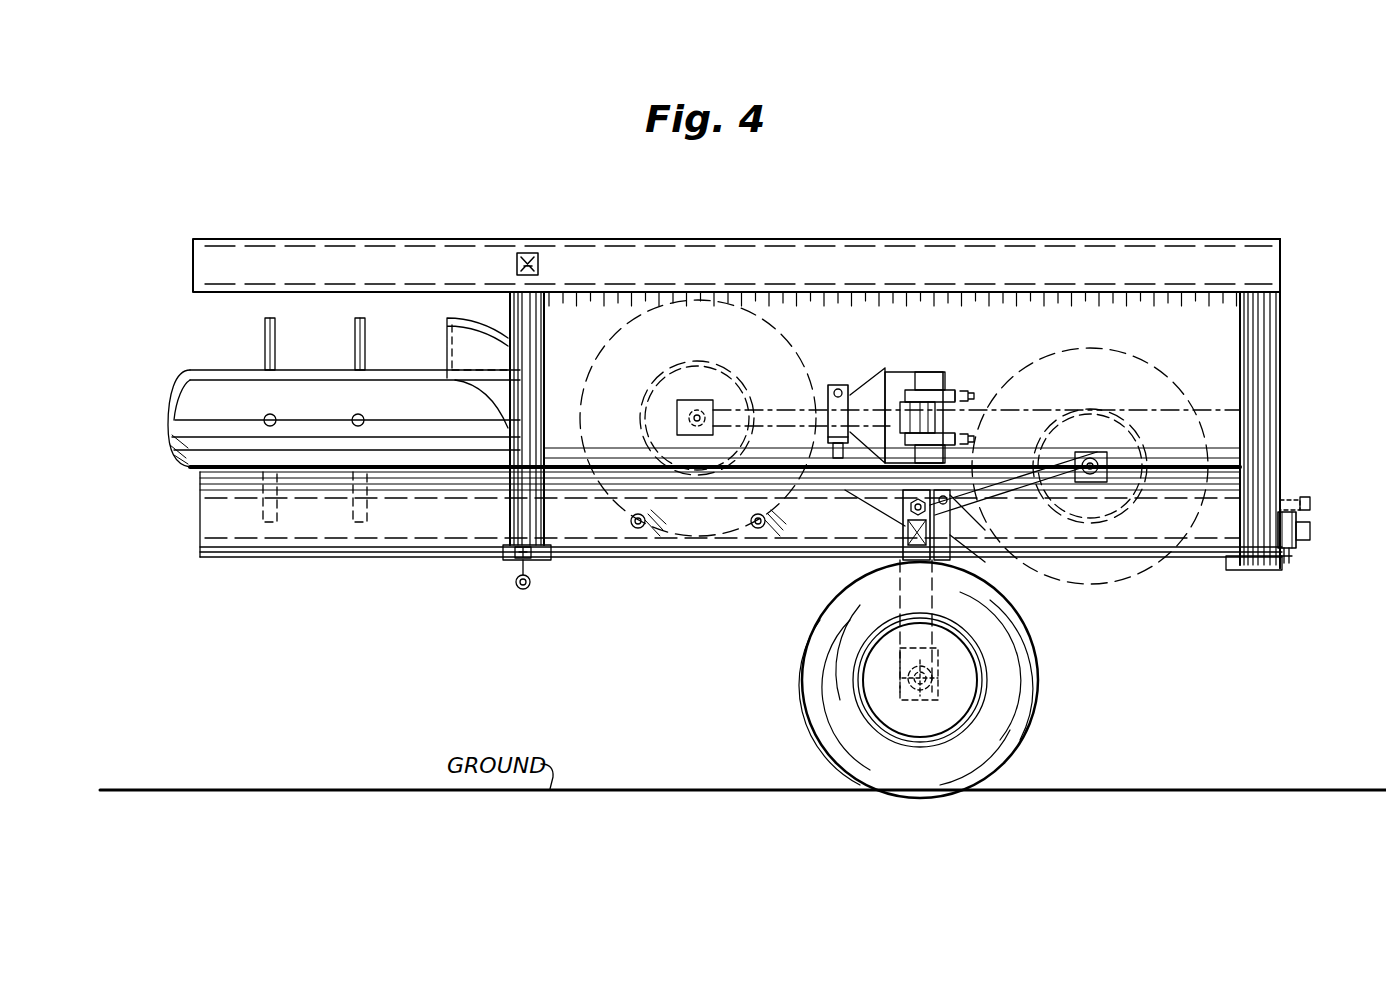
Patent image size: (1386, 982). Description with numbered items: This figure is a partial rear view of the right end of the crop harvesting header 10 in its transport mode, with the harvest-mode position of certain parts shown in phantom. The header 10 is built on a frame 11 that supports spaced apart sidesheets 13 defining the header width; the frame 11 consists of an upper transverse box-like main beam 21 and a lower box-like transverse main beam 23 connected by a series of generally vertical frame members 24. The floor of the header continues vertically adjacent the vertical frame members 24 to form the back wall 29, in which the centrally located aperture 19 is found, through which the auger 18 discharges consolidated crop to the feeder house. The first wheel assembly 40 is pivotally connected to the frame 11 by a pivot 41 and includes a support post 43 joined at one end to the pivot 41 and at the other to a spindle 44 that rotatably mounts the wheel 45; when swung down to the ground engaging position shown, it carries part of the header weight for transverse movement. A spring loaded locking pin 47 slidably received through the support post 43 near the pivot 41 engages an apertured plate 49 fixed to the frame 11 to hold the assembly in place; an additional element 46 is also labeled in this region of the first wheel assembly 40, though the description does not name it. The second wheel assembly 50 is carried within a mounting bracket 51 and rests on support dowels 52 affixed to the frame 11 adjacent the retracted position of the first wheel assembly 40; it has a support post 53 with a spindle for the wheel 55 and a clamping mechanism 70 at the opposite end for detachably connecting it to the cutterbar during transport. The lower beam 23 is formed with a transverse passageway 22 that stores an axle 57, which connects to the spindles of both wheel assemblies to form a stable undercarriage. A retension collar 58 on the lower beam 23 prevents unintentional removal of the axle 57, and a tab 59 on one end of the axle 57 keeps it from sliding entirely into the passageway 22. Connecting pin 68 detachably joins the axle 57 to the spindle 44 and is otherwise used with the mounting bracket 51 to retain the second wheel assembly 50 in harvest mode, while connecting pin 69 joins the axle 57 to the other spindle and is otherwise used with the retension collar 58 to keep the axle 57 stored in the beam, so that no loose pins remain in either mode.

The crop harvesting header 10 is at (793, 181).
The frame 11 is at (945, 240).
The upper transverse box-like main beam 21 is at (1105, 240).
The centrally located aperture 19 is at (265, 337).
The auger 18 is at (447, 348).
The vertical frame members 24 is at (510, 322).
The sidesheets 13 is at (1281, 384).
The passageway 22 is at (215, 499).
The lower box-like transverse main beam 23 is at (205, 558).
The wheel 55 is at (612, 353).
The support post 53 is at (790, 406).
The mounting bracket 51 is at (838, 384).
The connecting pin 68 is at (881, 369).
The back wall 29 is at (968, 333).
The clamping mechanism 70 is at (941, 371).
The wheel 45 is at (1142, 368).
The spring loaded locking pin 47 is at (960, 542).
The apertured plate 49 is at (870, 500).
The pivot 41 is at (903, 530).
The axle arm 46 is at (885, 552).
The support post 43 is at (895, 592).
The first wheel assembly 40 is at (1125, 584).
The spindle 44 is at (932, 680).
The support dowels 52 is at (630, 523).
The second wheel assembly 50 is at (712, 560).
The connecting pin 69 is at (1290, 500).
The tab 59 is at (1310, 500).
The retension collar 58 is at (1300, 532).
The axle 57 is at (1305, 536).